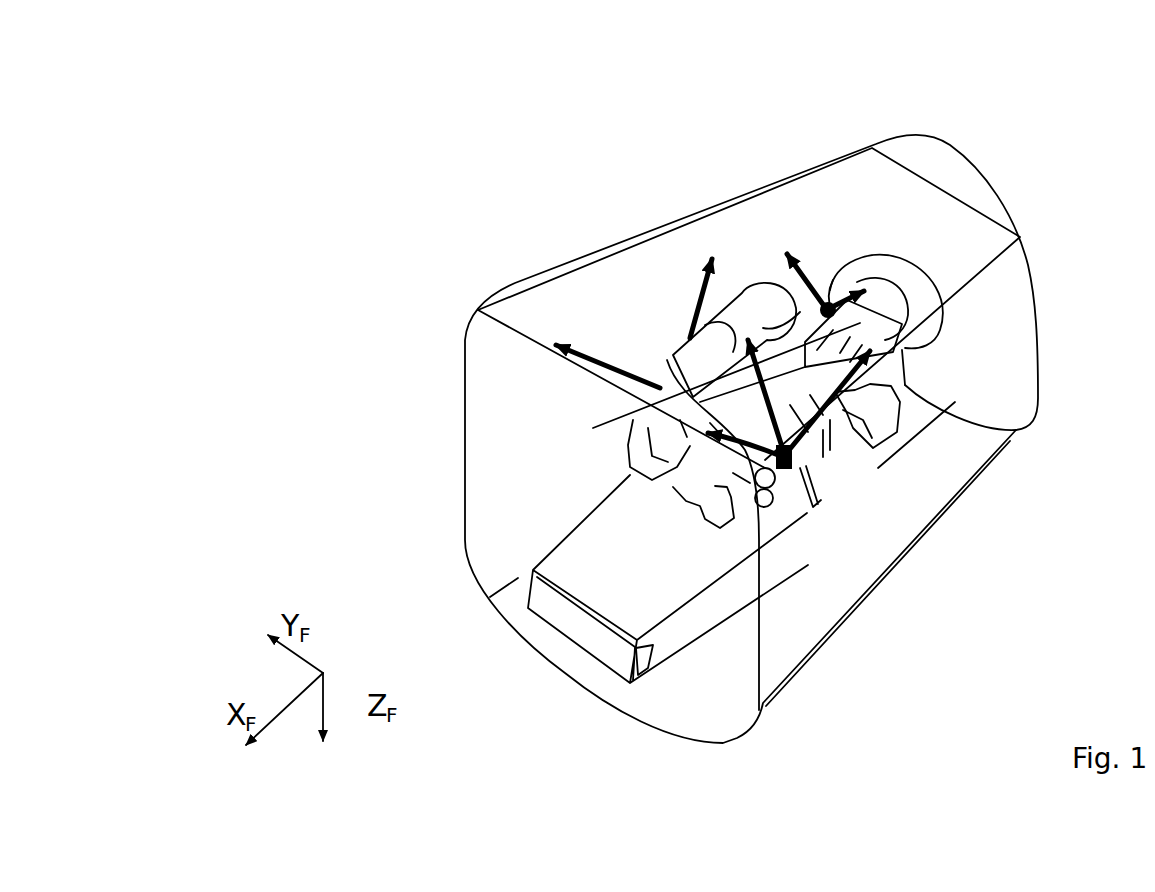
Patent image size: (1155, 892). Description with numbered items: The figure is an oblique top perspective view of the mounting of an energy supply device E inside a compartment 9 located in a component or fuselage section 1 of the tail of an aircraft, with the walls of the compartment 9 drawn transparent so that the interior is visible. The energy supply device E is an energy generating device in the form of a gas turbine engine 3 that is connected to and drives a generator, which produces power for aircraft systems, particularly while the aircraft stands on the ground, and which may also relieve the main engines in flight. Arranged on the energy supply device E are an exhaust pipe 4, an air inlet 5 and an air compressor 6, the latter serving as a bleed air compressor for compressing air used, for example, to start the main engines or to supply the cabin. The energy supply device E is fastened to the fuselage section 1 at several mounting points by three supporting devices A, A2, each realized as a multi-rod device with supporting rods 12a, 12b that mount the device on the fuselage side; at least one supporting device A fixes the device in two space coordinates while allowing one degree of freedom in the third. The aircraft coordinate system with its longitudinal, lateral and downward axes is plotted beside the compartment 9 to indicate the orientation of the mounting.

The fuselage section 1 is at (578, 263).
The gas turbine engine 3 is at (840, 418).
The exhaust pipe 4 is at (913, 290).
The air inlet 5 is at (637, 518).
The air compressor 6 is at (825, 440).
The APU compartment 9 is at (803, 630).
The supporting rod 12a is at (713, 295).
The supporting rod 12b is at (850, 282).
The supporting device A is at (832, 203).
The supporting device A2 is at (671, 329).
The energy supply device E is at (768, 303).